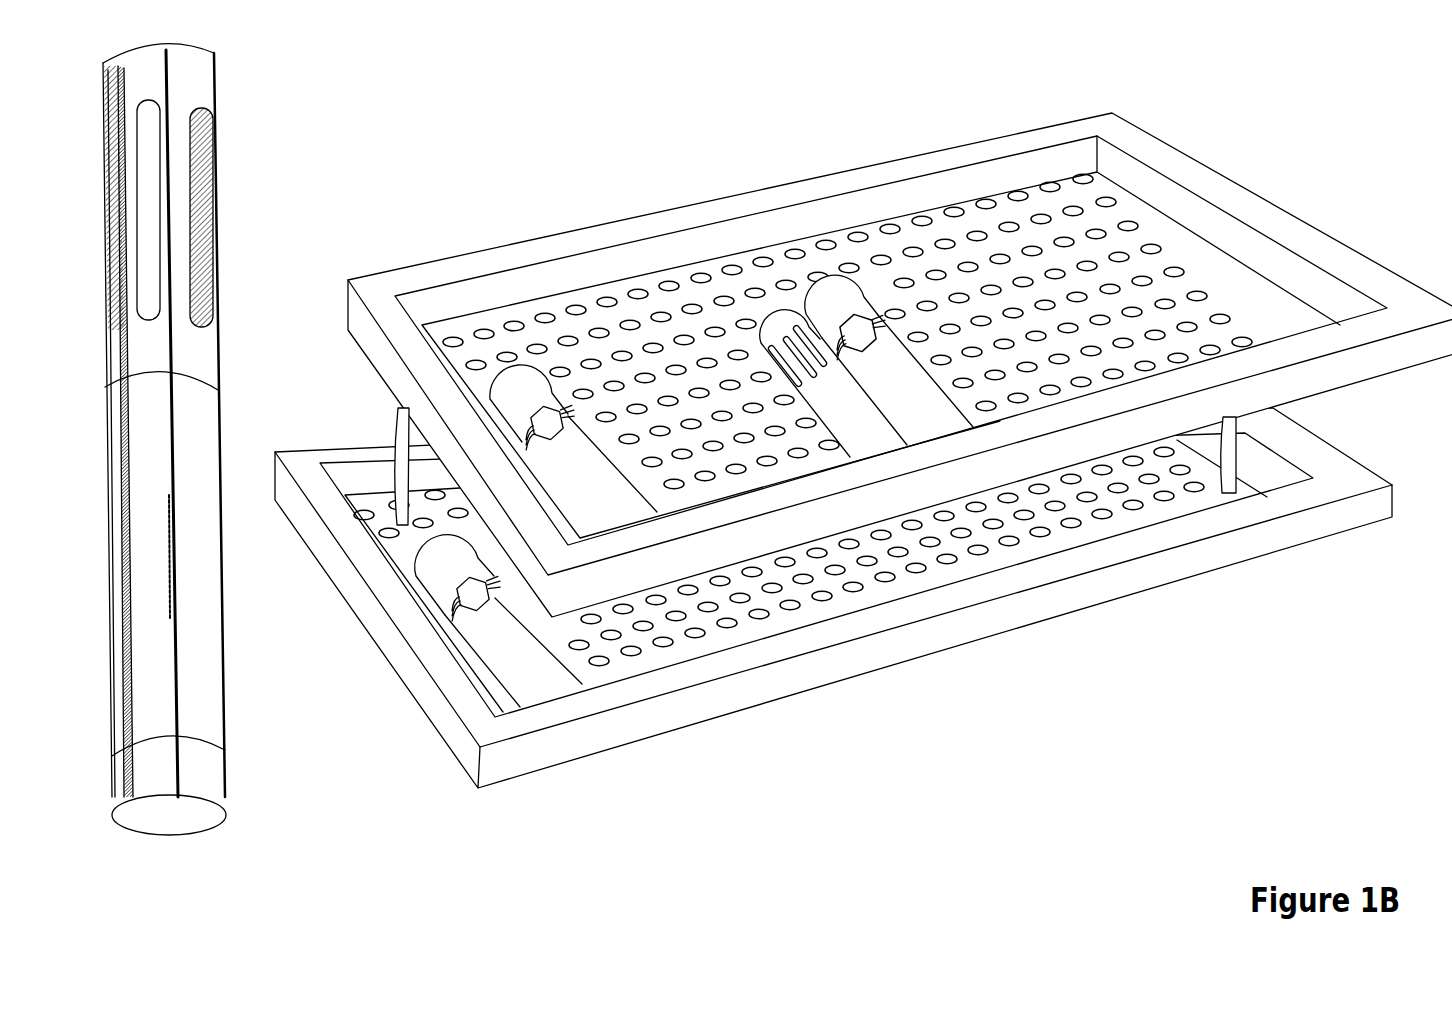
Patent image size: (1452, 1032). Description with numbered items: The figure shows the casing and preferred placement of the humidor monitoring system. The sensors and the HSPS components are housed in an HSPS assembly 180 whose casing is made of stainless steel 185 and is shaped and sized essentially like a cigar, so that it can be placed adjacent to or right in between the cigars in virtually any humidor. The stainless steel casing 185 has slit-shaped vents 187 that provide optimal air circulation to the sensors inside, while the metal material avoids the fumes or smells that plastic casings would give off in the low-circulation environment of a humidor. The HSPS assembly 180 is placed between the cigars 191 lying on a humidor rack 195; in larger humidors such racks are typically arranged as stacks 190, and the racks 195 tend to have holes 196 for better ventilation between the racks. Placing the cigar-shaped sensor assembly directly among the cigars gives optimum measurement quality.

The HSPS assembly 180 is at (574, 468).
The stainless steel casing 185 is at (183, 824).
The slit-shaped vents 187 is at (207, 165).
The stacks 190 is at (863, 451).
The cigars 191 is at (517, 378).
The humidor rack 195 is at (731, 684).
The holes 196 is at (1133, 320).